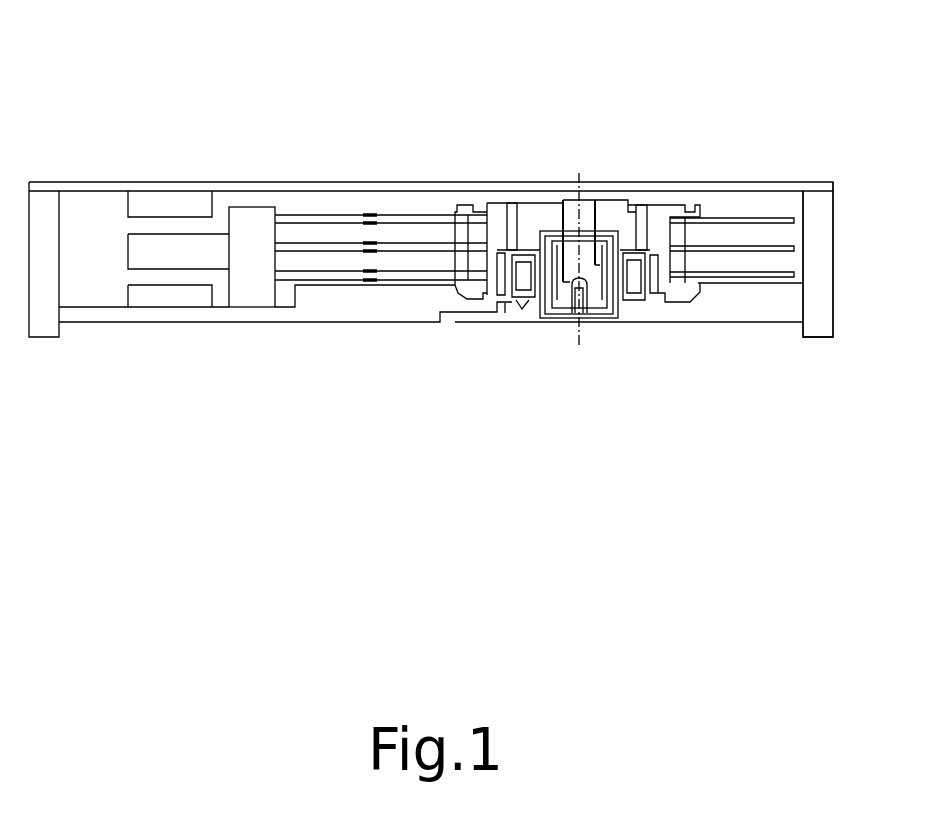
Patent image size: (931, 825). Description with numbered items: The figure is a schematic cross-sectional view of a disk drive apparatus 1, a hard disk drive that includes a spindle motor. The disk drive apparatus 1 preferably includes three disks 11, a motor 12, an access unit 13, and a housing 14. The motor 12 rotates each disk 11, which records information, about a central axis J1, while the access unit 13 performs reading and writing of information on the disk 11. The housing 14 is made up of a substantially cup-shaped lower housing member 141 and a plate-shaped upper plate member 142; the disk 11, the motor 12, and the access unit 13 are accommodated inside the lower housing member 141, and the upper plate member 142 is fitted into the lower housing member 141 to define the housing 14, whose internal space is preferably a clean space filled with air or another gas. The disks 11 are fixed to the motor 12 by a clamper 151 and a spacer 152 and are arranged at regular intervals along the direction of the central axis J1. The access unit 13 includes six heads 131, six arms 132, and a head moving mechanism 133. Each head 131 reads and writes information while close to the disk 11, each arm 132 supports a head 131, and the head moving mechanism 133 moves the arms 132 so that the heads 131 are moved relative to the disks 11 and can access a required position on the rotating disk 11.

The disk drive apparatus 1 is at (111, 24).
The disk 11 is at (748, 252).
The motor 12 is at (536, 212).
The access unit 13 is at (308, 85).
The head 131 is at (370, 214).
The arm 132 is at (313, 240).
The head moving mechanism 133 is at (250, 268).
The housing 14 is at (722, 100).
The lower housing member 141 is at (820, 228).
The upper plate member 142 is at (710, 190).
The clamper 151 is at (478, 212).
The spacer 152 is at (477, 258).
The central axis J1 is at (578, 174).